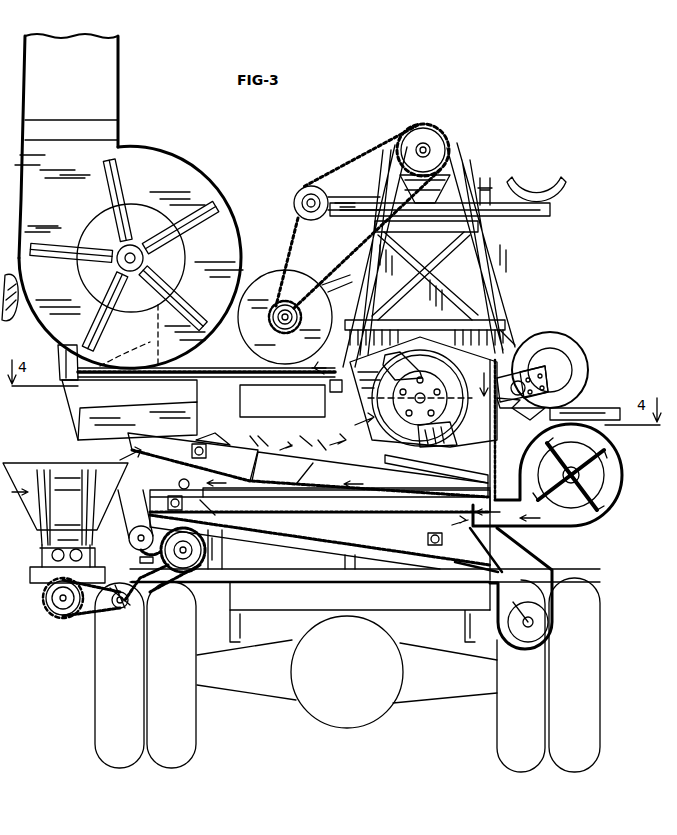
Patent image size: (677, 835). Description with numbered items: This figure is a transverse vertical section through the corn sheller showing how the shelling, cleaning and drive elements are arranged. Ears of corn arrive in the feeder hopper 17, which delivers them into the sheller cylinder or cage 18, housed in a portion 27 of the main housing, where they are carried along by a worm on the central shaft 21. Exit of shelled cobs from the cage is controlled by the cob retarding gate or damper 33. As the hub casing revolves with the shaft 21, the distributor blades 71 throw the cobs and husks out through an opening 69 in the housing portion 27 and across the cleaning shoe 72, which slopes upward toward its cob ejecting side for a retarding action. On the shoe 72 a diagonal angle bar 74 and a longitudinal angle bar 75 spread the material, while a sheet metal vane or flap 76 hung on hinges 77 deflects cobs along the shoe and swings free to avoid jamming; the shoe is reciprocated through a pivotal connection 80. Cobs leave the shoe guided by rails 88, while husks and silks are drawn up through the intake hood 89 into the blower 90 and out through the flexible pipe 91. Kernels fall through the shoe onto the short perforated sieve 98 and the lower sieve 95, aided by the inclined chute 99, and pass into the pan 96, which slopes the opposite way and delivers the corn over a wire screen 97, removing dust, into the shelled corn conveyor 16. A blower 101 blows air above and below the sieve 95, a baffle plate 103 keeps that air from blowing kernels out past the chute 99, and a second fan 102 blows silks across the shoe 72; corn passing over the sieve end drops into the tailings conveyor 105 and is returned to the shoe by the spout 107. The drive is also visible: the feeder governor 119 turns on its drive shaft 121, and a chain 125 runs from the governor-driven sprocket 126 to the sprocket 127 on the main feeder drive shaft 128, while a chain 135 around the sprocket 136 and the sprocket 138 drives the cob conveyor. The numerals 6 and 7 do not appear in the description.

The flexible pipe 91 is at (108, 62).
The blower 90 is at (205, 148).
The intake hood 89 is at (146, 343).
The spout 107 is at (236, 365).
The chain 125 is at (333, 185).
The drive shaft 128 is at (428, 142).
The sprocket 127 is at (440, 140).
The drive shaft 121 is at (283, 340).
The feeder governor 119 is at (338, 258).
The sprocket 126 is at (322, 294).
The hinges 77 is at (318, 360).
The feeder hopper 17 is at (455, 305).
The housing portion 27 is at (470, 345).
The blades 71 is at (415, 355).
The shaft 21 is at (428, 392).
The section line 6 is at (478, 384).
The cob retarding gate 33 is at (358, 420).
The sheller cylinder 18 is at (341, 388).
The angle bar 75 is at (262, 440).
The cleaning shoe 72 is at (302, 436).
The angle bar 74 is at (350, 445).
The sheet metal vane 76 is at (246, 430).
The second fan 102 is at (630, 332).
The blower 101 is at (664, 470).
The guide rails 88 is at (100, 432).
The hopper 7 is at (25, 462).
The inclined chute 99 is at (180, 456).
The pivotal connection 80 is at (214, 452).
The baffle plate 103 is at (305, 478).
The short perforated sieve 98 is at (436, 478).
The opening 69 is at (347, 470).
The second shoe or sieve 95 is at (296, 516).
The pan 96 is at (342, 542).
The wire screen 97 is at (428, 540).
The shelled corn conveyor 16 is at (548, 570).
The tailings conveyor 105 is at (143, 526).
The sprocket 138 is at (178, 572).
The sprocket 136 is at (44, 610).
The chain 135 is at (82, 612).